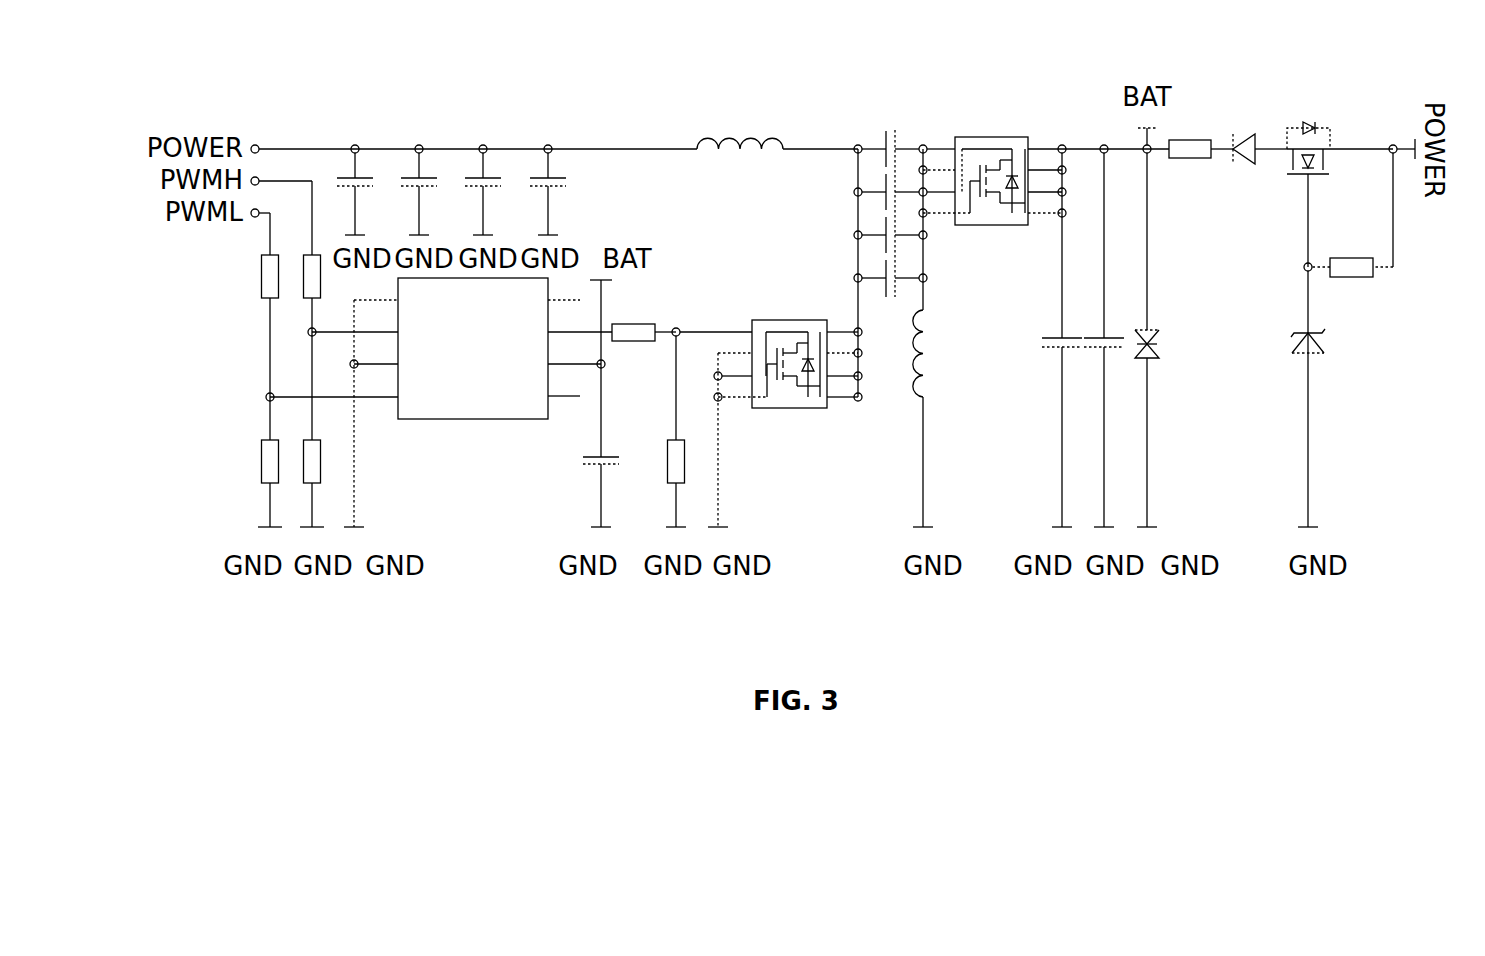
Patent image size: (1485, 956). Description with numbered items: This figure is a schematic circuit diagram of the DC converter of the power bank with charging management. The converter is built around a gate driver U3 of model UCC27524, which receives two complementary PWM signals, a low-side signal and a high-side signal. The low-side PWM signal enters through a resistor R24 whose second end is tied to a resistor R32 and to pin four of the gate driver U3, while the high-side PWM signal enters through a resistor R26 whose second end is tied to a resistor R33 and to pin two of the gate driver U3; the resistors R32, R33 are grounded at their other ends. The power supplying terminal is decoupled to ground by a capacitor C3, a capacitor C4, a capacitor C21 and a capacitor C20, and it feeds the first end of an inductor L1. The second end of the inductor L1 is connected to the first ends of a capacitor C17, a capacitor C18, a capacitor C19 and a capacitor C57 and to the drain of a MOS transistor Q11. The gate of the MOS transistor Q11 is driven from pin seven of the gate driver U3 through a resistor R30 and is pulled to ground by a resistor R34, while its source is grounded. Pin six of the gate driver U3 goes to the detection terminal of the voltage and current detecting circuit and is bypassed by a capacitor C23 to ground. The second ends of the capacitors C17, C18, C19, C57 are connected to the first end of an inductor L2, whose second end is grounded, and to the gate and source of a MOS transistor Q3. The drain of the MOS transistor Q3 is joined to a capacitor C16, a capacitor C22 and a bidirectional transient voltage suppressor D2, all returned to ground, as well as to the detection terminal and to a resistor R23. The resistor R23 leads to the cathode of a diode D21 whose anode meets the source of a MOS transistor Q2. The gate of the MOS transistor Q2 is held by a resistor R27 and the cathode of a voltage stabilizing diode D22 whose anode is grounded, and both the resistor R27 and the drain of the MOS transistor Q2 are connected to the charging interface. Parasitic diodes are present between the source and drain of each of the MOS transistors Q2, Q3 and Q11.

The resistor R24 is at (258, 326).
The resistor R26 is at (300, 347).
The resistor R32 is at (284, 462).
The resistor R33 is at (327, 462).
The gate driver U3 is at (491, 369).
The capacitor C20 is at (367, 190).
The capacitor C21 is at (431, 190).
The capacitor C3 is at (495, 190).
The capacitor C4 is at (560, 190).
The inductor L1 is at (740, 121).
The capacitor C17 is at (864, 157).
The capacitor C18 is at (864, 195).
The capacitor C19 is at (864, 238).
The capacitor C57 is at (864, 281).
The MOS transistor Q3 is at (992, 203).
The inductor L2 is at (940, 418).
The resistor R30 is at (680, 313).
The capacitor C23 is at (613, 492).
The resistor R34 is at (691, 431).
The MOS transistor Q11 is at (785, 423).
The capacitor C16 is at (1055, 340).
The capacitor C22 is at (1097, 336).
The bidirectional transient voltage suppressor D2 is at (1155, 327).
The resistor R23 is at (1201, 184).
The diode D21 is at (1256, 182).
The MOS transistor Q2 is at (1324, 170).
The resistor R27 is at (1348, 215).
The voltage stabilizing diode D22 is at (1329, 399).